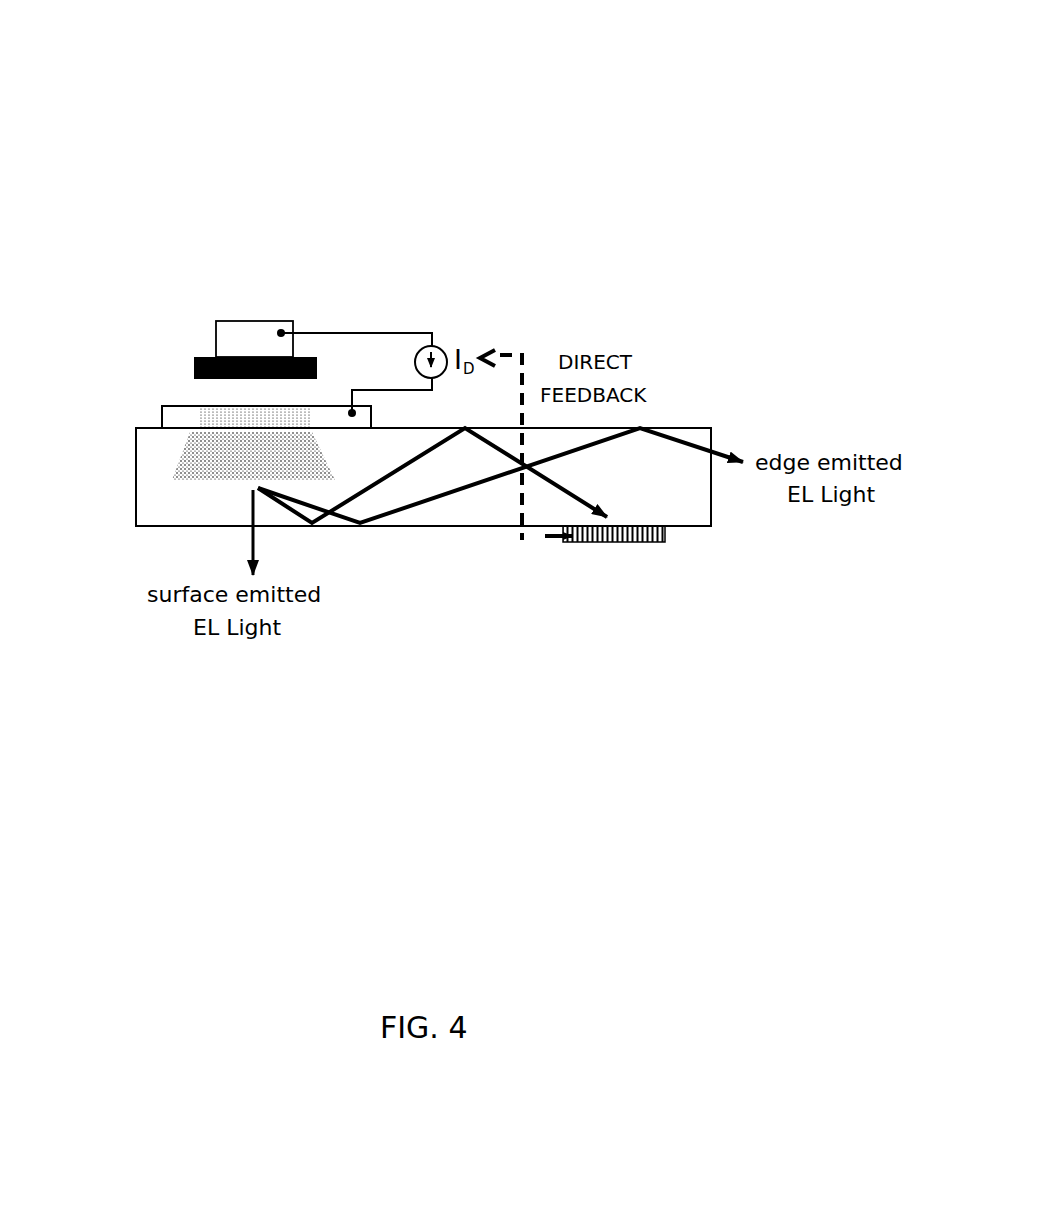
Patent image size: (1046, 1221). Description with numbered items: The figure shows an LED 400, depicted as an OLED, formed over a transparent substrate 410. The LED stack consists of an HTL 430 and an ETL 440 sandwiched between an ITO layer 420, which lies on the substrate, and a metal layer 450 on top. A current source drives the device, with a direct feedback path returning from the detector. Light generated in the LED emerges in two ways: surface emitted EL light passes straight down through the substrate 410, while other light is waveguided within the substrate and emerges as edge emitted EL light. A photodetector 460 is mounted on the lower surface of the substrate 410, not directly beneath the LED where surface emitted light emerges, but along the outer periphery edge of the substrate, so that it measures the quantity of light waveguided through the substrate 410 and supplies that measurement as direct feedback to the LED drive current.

The LED 400 is at (498, 222).
The transparent substrate 410 is at (163, 478).
The ITO layer 420 is at (165, 418).
The HTL 430 is at (198, 391).
The ETL 440 is at (192, 365).
The metal layer 450 is at (223, 335).
The photodetector 460 is at (567, 550).